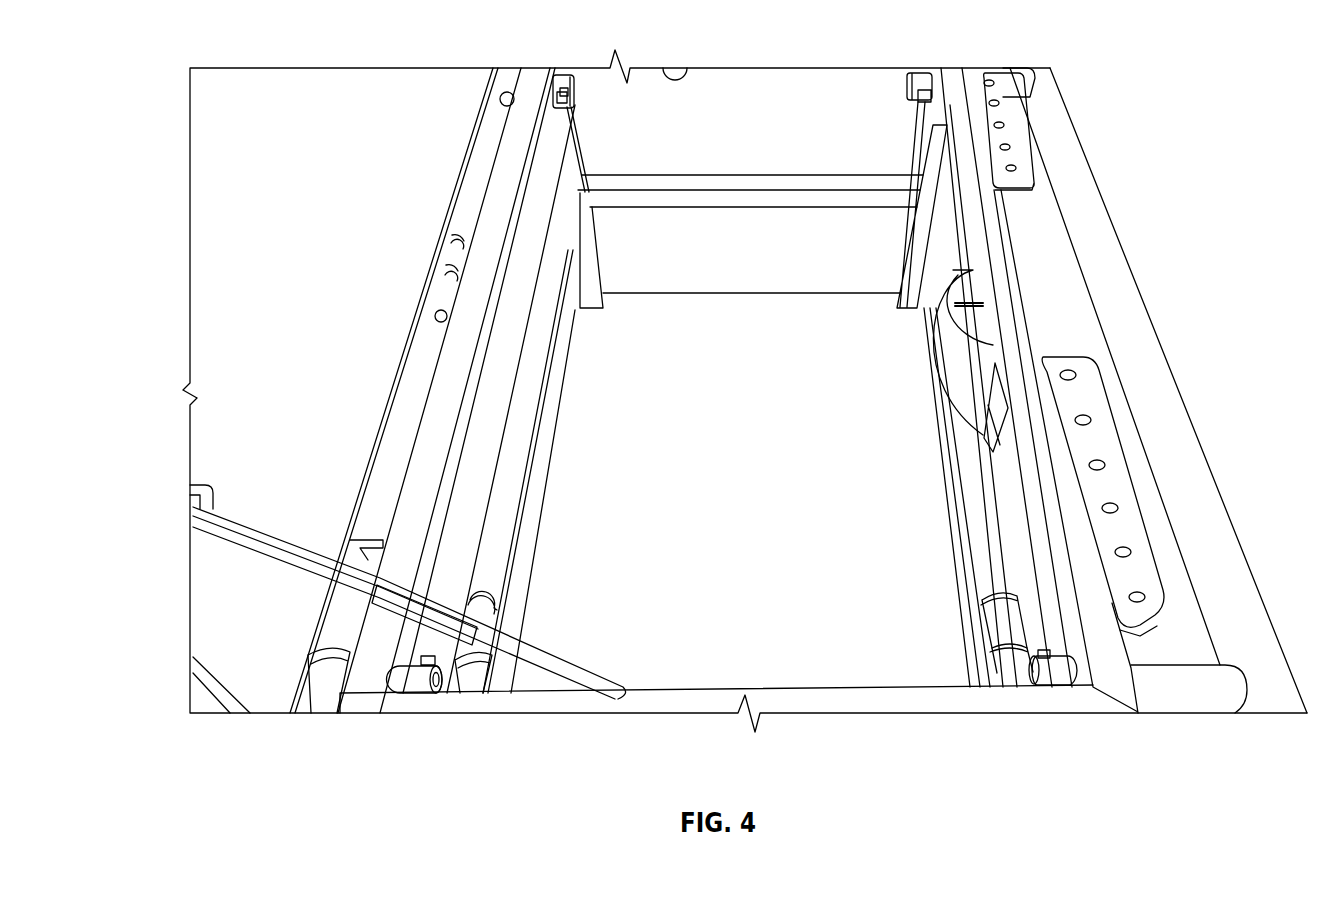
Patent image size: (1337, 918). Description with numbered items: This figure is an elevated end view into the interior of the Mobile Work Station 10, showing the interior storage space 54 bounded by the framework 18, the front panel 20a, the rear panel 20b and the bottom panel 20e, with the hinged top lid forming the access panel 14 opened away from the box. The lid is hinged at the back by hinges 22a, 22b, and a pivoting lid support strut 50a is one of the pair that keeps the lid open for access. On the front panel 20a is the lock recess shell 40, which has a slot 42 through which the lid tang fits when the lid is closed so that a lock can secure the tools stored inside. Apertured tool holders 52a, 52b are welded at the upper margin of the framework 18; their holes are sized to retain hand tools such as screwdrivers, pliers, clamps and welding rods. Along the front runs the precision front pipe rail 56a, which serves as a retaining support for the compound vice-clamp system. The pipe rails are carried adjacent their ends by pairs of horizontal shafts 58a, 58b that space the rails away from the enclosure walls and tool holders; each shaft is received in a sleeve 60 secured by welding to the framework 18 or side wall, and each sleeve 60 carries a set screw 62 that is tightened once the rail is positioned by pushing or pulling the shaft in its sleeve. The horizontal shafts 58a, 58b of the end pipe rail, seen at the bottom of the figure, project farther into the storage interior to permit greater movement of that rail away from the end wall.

The Mobile Work Station 10 is at (1183, 74).
The access panel 14 is at (222, 302).
The framework 18 is at (558, 145).
The front panel 20a is at (1022, 525).
The rear panel 20b is at (503, 355).
The bottom panel 20e is at (778, 483).
The hinge 22a is at (508, 78).
The hinge 22b is at (440, 302).
The lock recess shell 40 is at (955, 385).
The slot 42 is at (985, 300).
The lid support strut 50a is at (490, 590).
The tool holder 52a is at (1118, 508).
The tool holder 52b is at (985, 110).
The interior storage space 54 is at (673, 268).
The front pipe rail 56a is at (1110, 262).
The horizontal shaft 58a is at (575, 87).
The horizontal shaft 58b is at (905, 85).
The sleeve 60 is at (577, 107).
The set screw 62 is at (553, 100).